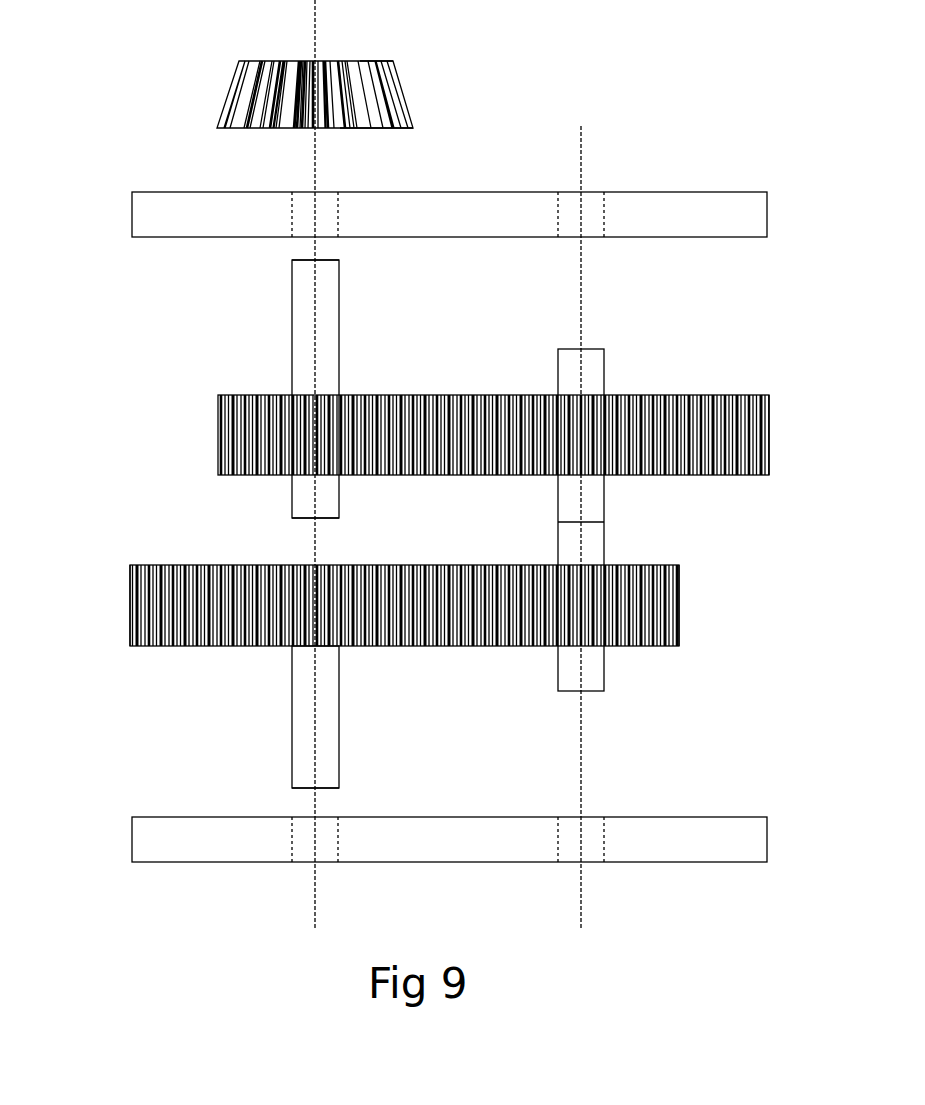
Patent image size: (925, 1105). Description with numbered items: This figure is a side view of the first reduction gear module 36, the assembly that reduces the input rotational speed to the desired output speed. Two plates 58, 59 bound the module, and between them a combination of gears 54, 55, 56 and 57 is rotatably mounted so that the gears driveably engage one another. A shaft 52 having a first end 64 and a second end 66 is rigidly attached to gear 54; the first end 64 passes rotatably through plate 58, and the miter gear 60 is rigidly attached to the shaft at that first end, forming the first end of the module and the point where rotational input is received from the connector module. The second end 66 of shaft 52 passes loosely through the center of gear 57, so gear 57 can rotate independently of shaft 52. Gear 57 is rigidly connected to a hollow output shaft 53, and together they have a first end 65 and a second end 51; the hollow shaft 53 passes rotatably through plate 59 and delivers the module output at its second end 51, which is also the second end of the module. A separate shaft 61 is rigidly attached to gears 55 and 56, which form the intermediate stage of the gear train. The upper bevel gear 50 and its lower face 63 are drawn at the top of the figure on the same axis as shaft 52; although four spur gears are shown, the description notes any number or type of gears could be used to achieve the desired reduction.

The first reduction gear module 36 is at (687, 155).
The bevel gear 50 is at (280, 62).
The second end 51 is at (330, 788).
The shaft 52 is at (292, 360).
The hollow output shaft 53 is at (292, 735).
The gear 54 is at (218, 458).
The gear 55 is at (770, 402).
The gear 56 is at (679, 625).
The gear 57 is at (130, 612).
The plate 58 is at (245, 192).
The plate 59 is at (133, 847).
The miter gear 60 is at (398, 72).
The shaft 61 is at (607, 547).
The bevel gear lower face 63 is at (370, 128).
The first end 64 is at (300, 260).
The first end 65 is at (187, 565).
The second end 66 is at (307, 518).